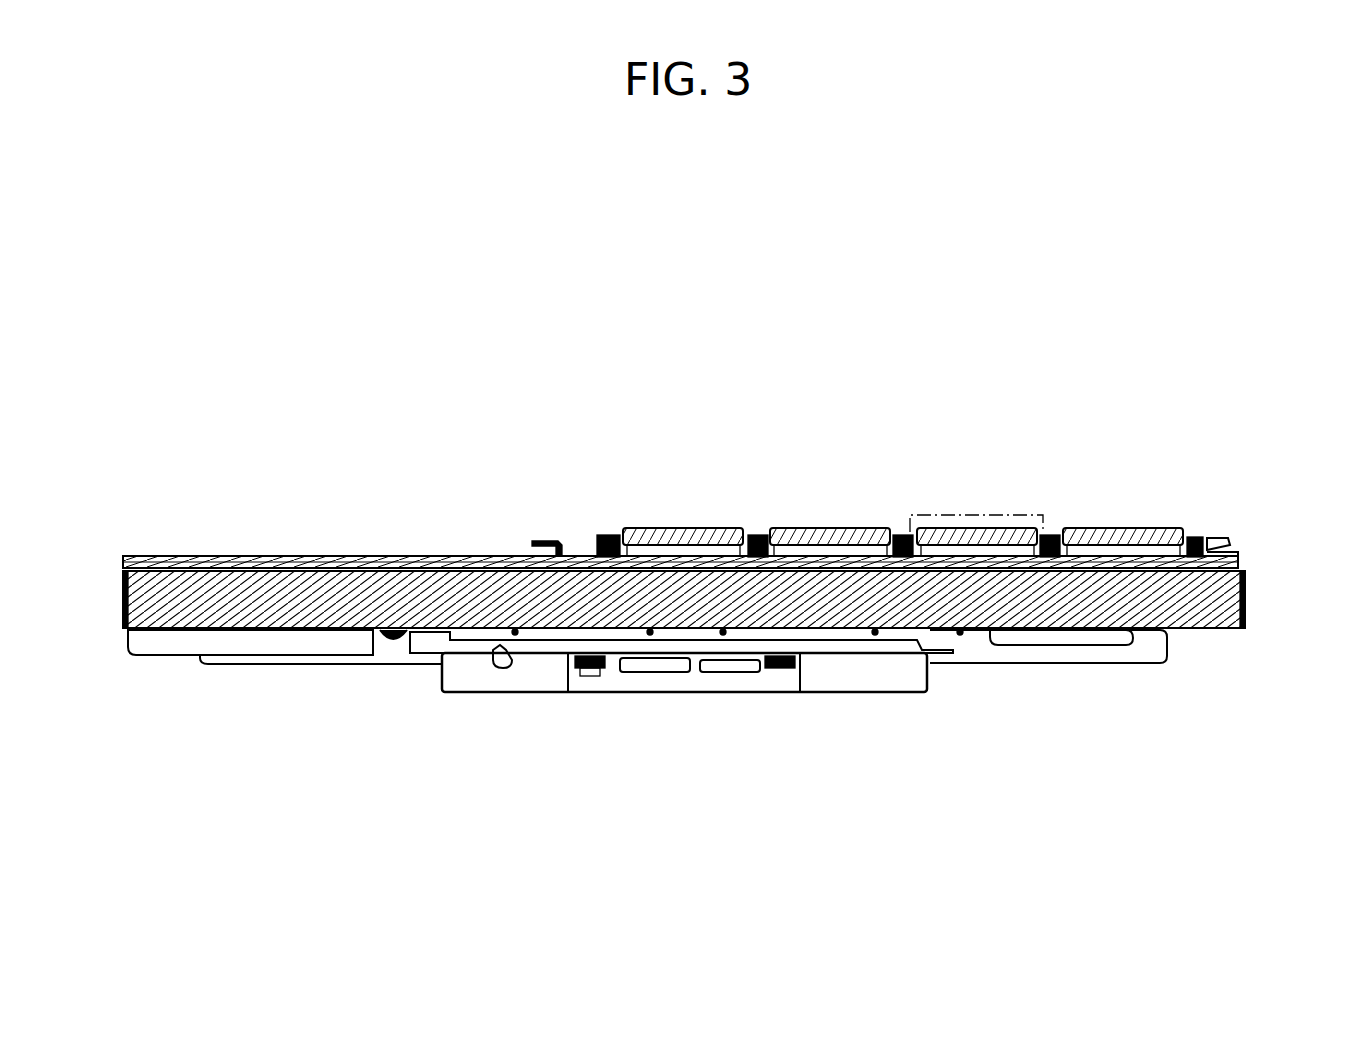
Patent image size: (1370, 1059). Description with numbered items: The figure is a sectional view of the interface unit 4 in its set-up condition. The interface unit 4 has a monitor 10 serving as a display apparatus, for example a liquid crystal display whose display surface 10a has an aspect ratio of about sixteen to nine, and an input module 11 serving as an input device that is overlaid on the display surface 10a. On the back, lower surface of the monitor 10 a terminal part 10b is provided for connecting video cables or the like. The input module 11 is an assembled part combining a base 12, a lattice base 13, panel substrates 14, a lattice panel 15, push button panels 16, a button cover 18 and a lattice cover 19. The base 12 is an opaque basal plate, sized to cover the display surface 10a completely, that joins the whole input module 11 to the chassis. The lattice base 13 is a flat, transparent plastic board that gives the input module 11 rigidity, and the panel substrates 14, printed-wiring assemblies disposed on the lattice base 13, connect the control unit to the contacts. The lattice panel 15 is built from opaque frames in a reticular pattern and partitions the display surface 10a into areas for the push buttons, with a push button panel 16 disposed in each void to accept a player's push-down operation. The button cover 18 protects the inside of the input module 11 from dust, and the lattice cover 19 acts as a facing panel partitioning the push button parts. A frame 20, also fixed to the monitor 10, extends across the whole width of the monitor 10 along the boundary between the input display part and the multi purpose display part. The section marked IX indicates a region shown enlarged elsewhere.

The interface unit 4 is at (413, 465).
The monitor 10 is at (1228, 613).
The display surface 10a is at (472, 557).
The terminal part 10b is at (640, 692).
The input module 11 is at (1182, 460).
The base 12 is at (298, 557).
The lattice base 13 is at (365, 557).
The panel substrate 14 is at (950, 540).
The lattice panel 15 is at (1195, 535).
The push button panel 16 is at (795, 530).
The button cover 18 is at (1047, 535).
The lattice cover 19 is at (903, 535).
The frame 20 is at (553, 540).
The section IX is at (996, 515).